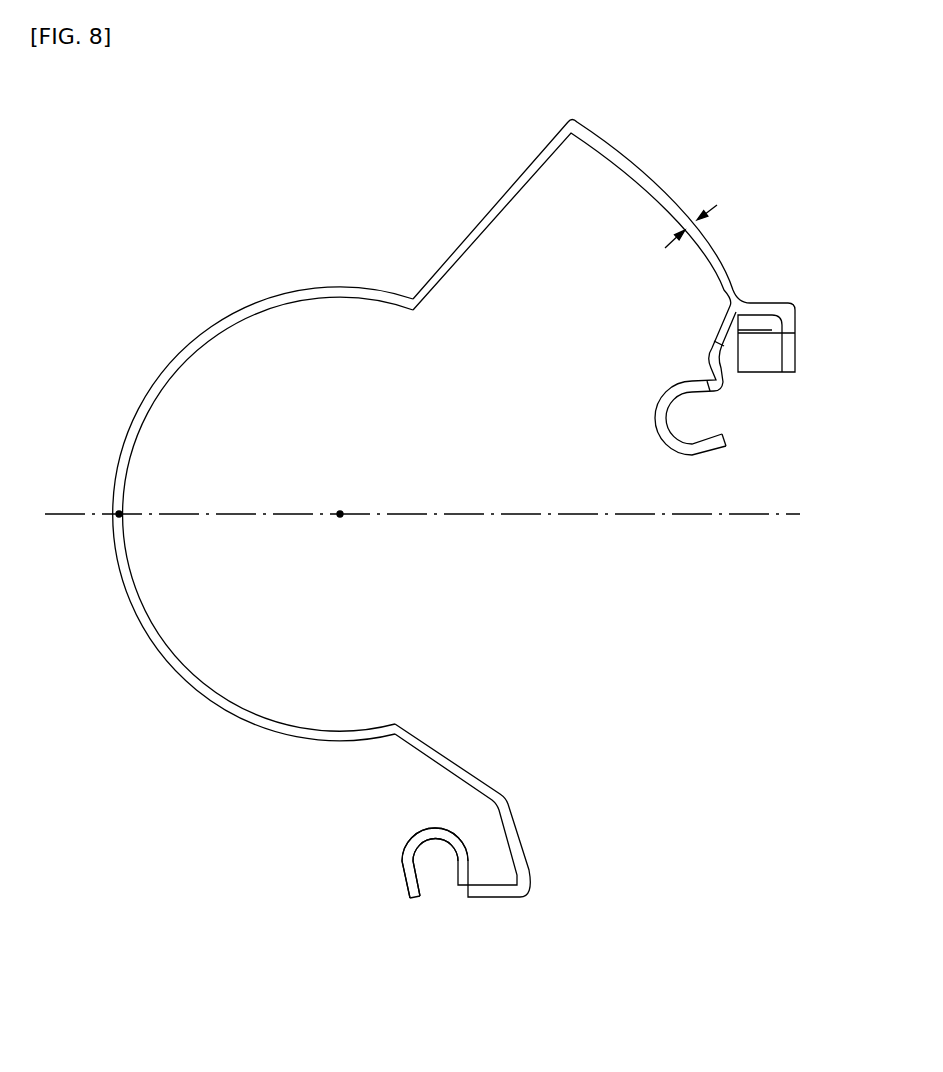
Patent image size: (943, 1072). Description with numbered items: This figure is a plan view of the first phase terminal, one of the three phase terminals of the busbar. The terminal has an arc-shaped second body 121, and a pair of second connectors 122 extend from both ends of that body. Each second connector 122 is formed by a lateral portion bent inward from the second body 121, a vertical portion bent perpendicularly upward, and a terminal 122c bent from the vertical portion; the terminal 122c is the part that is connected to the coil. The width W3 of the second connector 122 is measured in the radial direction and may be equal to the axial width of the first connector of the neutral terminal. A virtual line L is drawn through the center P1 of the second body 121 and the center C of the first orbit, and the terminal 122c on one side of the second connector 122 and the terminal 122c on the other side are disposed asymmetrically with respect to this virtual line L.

The second body 121 is at (185, 322).
The second connector 122 is at (695, 150).
The terminal 122c is at (711, 442).
The width of the second connector W3 is at (705, 232).
The center of the second body P1 is at (118, 516).
The center of the first orbit C is at (340, 517).
The virtual line L is at (712, 518).